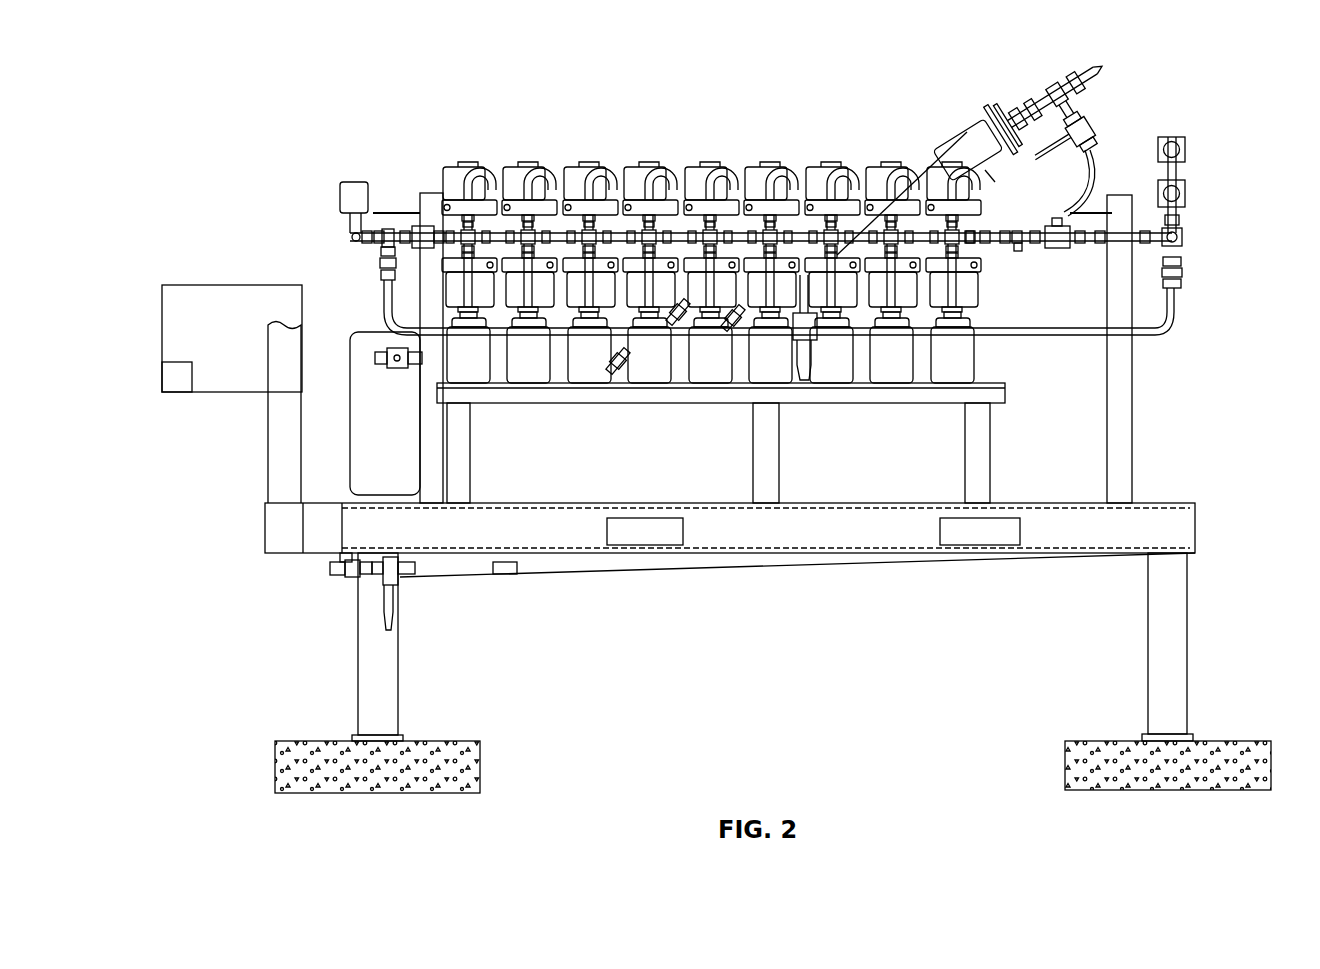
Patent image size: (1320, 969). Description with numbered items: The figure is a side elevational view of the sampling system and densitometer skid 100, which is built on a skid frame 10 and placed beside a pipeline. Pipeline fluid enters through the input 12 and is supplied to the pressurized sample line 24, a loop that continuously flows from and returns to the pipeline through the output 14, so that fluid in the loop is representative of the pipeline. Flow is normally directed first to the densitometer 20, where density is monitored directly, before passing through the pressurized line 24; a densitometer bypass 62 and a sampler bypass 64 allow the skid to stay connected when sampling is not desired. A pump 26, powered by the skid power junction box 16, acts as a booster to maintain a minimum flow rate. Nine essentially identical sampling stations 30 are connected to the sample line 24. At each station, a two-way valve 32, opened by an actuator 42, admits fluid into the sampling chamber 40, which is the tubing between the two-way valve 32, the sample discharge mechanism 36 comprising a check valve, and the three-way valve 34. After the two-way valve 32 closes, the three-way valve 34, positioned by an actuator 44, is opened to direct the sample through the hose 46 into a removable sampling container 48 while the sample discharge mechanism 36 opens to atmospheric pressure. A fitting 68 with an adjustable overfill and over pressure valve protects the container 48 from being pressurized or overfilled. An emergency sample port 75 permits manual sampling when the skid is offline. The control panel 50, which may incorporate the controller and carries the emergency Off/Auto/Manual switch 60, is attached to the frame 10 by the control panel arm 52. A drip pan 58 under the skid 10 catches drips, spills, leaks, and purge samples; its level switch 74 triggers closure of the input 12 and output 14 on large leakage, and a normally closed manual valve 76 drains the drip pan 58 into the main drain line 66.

The sampling system and densitometer skid 100 is at (377, 113).
The skid frame 10 is at (1135, 502).
The input 12 is at (349, 237).
The output 14 is at (375, 358).
The skid power junction box 16 is at (372, 332).
The densitometer 20 is at (972, 128).
The pressurized sample line 24 is at (462, 172).
The pump 26 is at (380, 256).
The sampling station 30 is at (831, 150).
The two-way valve 32 is at (688, 232).
The three-way valve 34 is at (738, 185).
The sample discharge mechanism 36 is at (768, 232).
The sampling chamber 40 is at (582, 172).
The actuator 42 is at (457, 166).
The actuator 44 is at (907, 303).
The hose 46 is at (950, 286).
The sampling container 48 is at (527, 366).
The control panel 50 is at (216, 285).
The control panel arm 52 is at (268, 455).
The drip pan 58 is at (740, 569).
The emergency Off/Auto/Manual switch 60 is at (175, 393).
The densitometer bypass 62 is at (1088, 139).
The sampler bypass 64 is at (1178, 295).
The main drain line 66 is at (340, 573).
The fitting 68 is at (755, 306).
The level switch 74 is at (507, 572).
The emergency sample port 75 is at (1028, 248).
The manual valve 76 is at (394, 580).